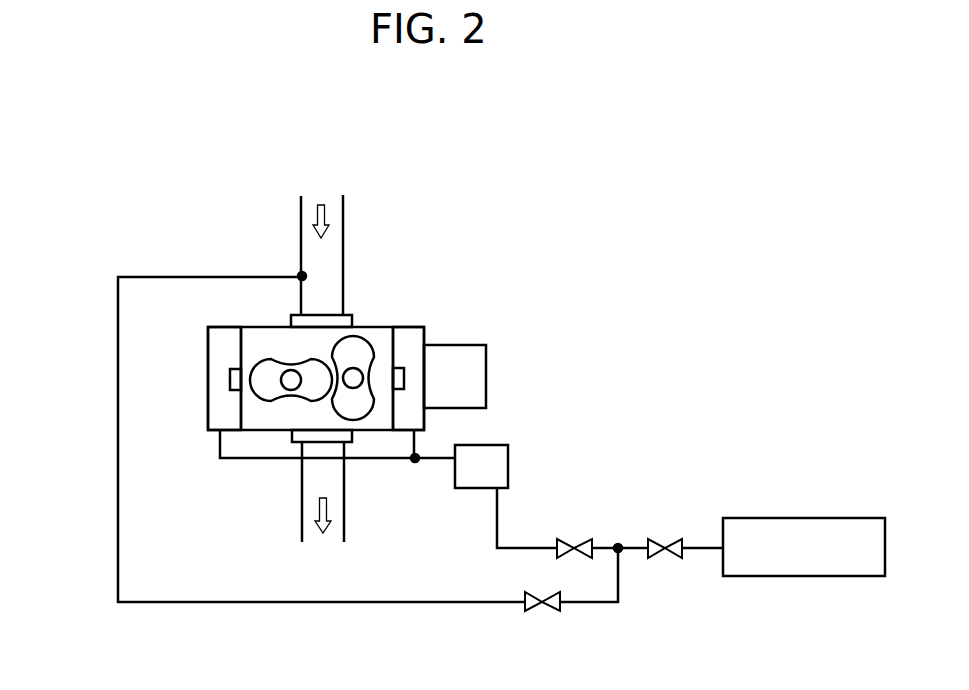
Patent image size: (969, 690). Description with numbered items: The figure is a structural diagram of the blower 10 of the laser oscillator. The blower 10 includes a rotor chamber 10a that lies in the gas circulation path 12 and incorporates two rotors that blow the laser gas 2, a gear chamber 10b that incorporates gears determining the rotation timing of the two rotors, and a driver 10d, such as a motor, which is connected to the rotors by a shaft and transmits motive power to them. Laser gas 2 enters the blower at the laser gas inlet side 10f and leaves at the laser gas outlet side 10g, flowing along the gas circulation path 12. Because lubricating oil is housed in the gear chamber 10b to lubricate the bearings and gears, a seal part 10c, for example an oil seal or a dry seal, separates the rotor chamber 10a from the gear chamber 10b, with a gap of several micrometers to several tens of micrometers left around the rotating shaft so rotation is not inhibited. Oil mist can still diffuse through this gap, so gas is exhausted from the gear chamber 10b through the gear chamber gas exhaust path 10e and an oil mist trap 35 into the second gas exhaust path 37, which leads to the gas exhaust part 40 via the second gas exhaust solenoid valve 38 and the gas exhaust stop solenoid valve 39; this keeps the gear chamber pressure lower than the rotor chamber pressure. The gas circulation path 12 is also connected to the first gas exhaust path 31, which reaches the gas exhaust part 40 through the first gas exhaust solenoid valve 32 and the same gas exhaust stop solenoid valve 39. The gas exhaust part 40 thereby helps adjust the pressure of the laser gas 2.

The laser gas 2 is at (324, 198).
The blower 10 is at (248, 327).
The rotor chamber 10a is at (370, 333).
The gear chamber 10b is at (210, 337).
The seal part 10c is at (230, 380).
The driver 10d is at (473, 378).
The gear chamber gas exhaust path 10e is at (235, 460).
The laser gas inlet side 10f is at (297, 313).
The laser gas outlet side 10g is at (298, 442).
The gas circulation path 12 is at (347, 522).
The first gas exhaust path 31 is at (410, 602).
The first gas exhaust solenoid valve 32 is at (552, 607).
The oil mist trap 35 is at (492, 462).
The second gas exhaust path 37 is at (513, 547).
The second gas exhaust solenoid valve 38 is at (582, 542).
The gas exhaust stop solenoid valve 39 is at (673, 542).
The gas exhaust part 40 is at (810, 518).